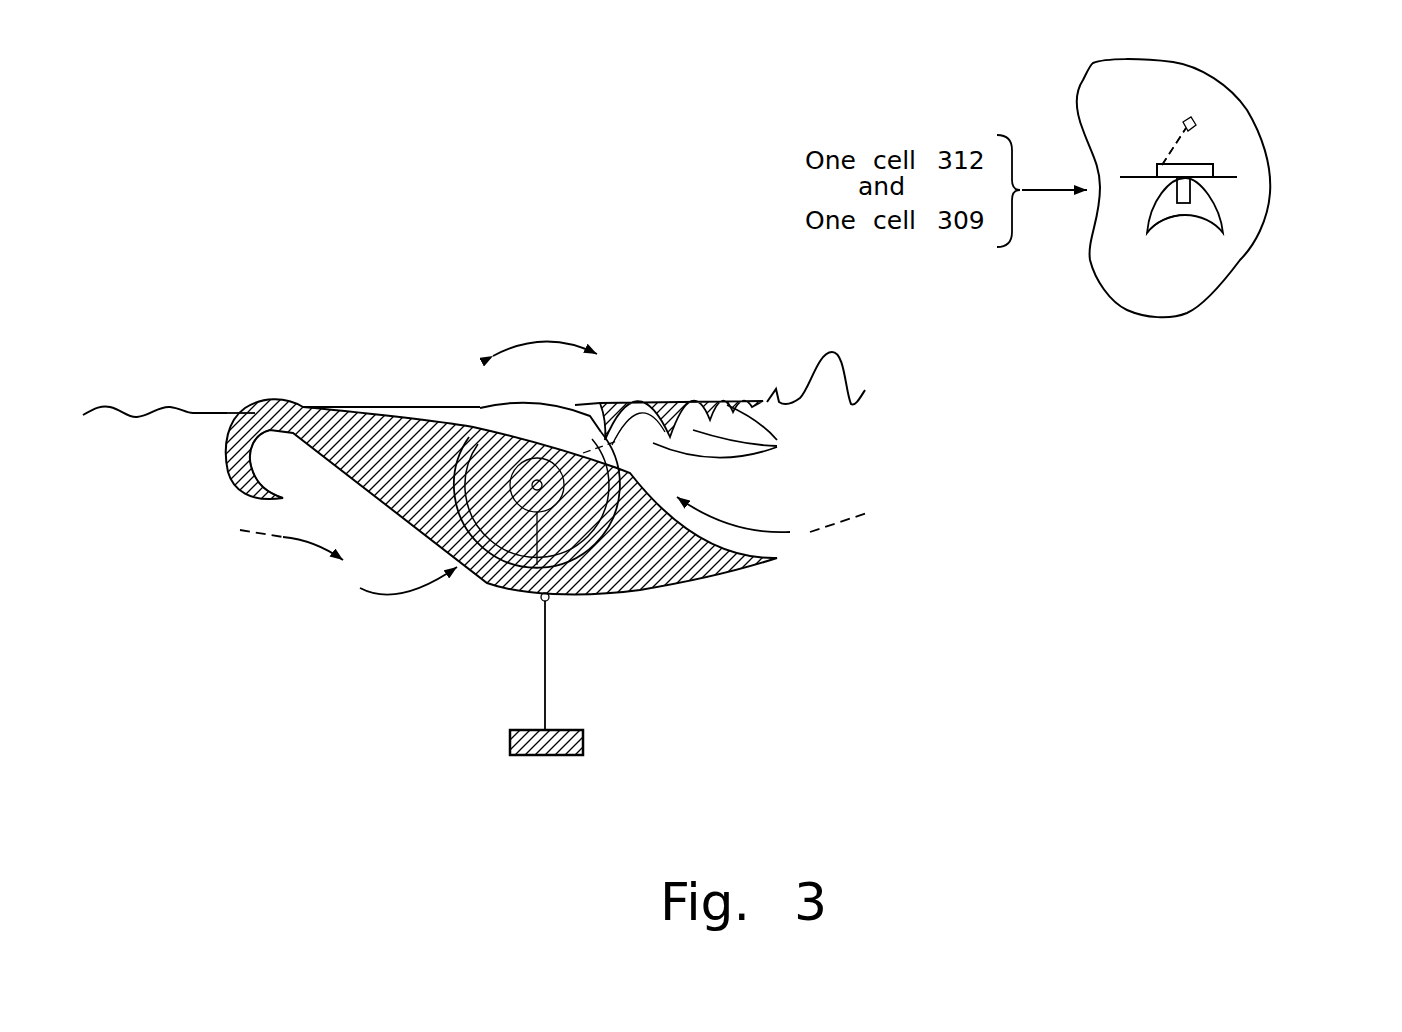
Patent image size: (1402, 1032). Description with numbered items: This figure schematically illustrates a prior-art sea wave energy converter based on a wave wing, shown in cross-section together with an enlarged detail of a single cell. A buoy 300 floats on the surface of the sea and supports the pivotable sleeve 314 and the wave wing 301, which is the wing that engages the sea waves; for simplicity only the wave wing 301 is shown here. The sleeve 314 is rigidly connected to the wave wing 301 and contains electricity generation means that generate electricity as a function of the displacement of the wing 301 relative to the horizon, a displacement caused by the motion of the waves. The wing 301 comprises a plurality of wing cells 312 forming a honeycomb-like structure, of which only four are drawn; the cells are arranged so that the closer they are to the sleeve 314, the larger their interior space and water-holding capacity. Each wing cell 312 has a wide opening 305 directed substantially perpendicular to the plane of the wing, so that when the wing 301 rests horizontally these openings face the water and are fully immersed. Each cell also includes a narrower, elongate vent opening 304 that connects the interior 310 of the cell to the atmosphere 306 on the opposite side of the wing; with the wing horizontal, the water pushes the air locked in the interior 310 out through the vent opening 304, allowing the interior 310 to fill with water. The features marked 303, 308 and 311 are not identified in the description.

The buoy 300 is at (740, 580).
The wave wing 301 is at (690, 400).
The hook inlet passage 303 is at (300, 473).
The vent opening 304 is at (1187, 193).
The wide opening 305 is at (1185, 222).
The atmosphere 306 is at (1154, 151).
The water surface 308 is at (217, 418).
The interior of the wing cell 310 is at (1165, 222).
The inlet lip 311 is at (224, 412).
The wing cells 312 is at (746, 433).
The pivotable sleeve 314 is at (517, 420).